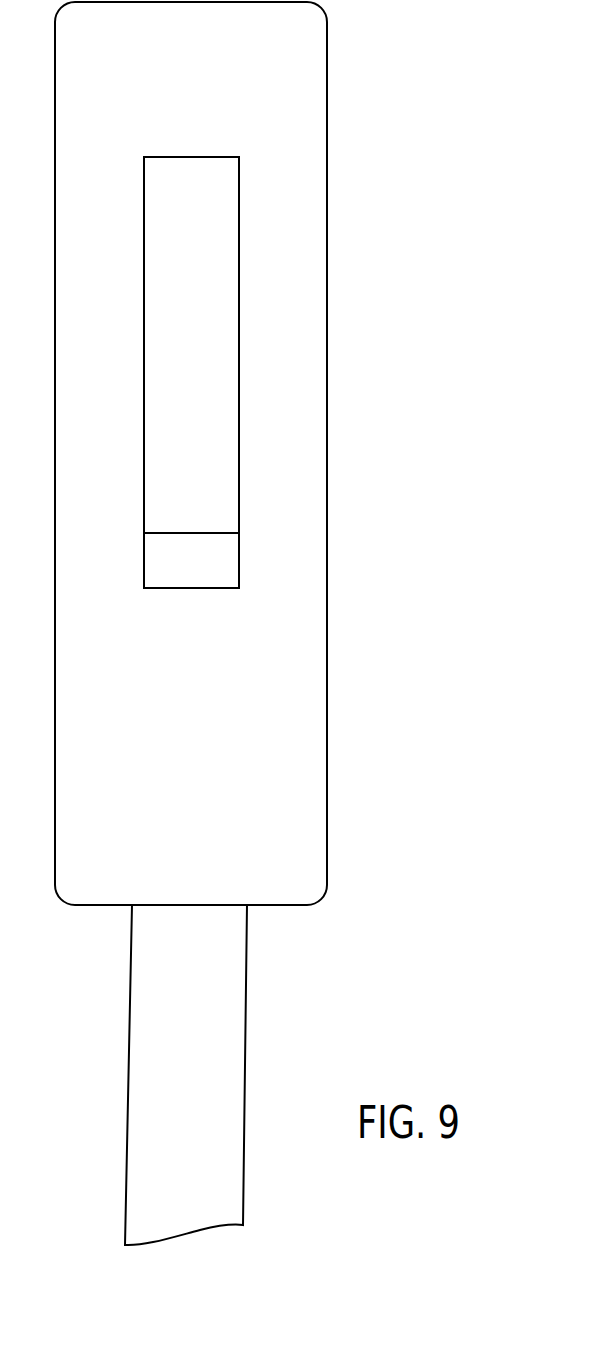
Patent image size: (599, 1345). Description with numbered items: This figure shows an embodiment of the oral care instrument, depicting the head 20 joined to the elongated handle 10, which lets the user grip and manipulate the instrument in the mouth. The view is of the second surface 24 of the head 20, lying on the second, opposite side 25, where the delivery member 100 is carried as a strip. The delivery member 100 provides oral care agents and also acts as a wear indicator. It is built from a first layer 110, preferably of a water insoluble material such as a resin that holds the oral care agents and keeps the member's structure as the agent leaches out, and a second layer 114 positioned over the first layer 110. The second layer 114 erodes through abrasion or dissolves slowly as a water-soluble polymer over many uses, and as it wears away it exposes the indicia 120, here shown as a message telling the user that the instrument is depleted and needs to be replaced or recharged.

The elongated handle 10 is at (237, 1045).
The head 20 is at (323, 62).
The second surface 24 is at (322, 575).
The second side 25 is at (312, 362).
The delivery member 100 is at (247, 281).
The first layer 110 is at (225, 182).
The second layer 114 is at (155, 578).
The indicia 120 is at (217, 352).